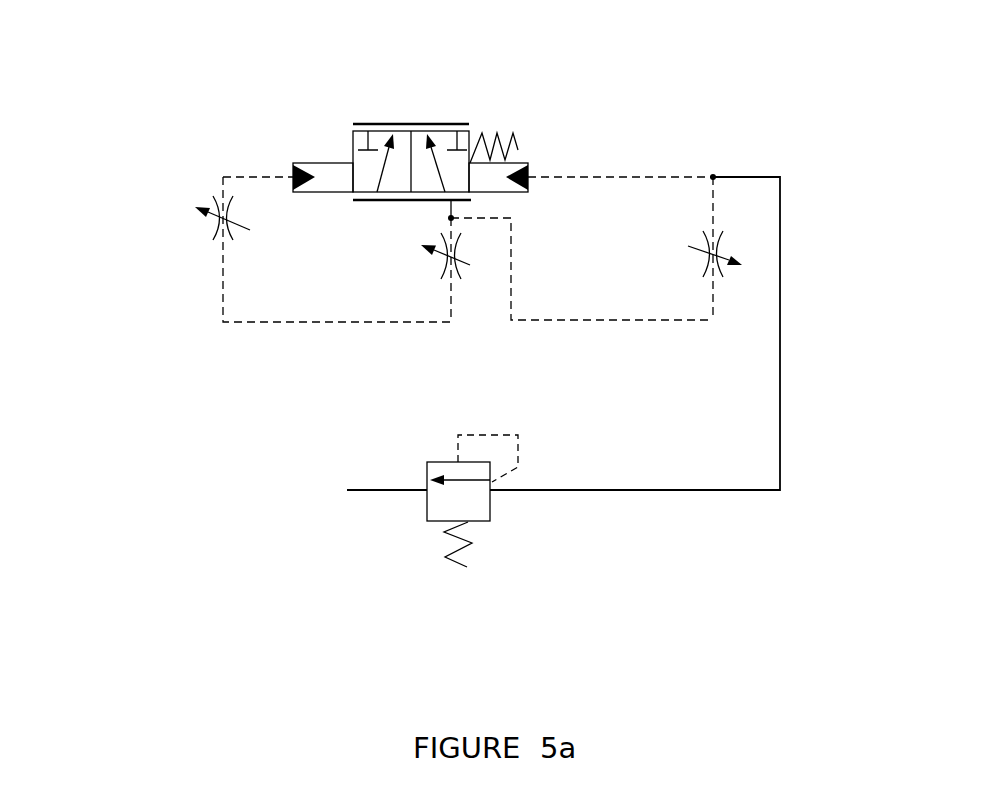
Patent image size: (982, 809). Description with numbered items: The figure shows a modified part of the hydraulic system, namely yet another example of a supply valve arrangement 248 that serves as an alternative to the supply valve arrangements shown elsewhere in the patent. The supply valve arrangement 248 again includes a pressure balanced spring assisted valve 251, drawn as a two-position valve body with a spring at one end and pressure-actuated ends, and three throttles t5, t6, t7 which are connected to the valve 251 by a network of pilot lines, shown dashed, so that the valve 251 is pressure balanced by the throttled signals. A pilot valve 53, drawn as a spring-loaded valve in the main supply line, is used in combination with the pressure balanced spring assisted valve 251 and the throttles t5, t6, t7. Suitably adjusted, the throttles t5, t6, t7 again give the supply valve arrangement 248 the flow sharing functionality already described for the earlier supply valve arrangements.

The supply valve arrangement 248 is at (313, 440).
The pressure balanced spring assisted valve 251 is at (365, 163).
The throttle t5 is at (210, 227).
The throttle t6 is at (456, 268).
The throttle t7 is at (722, 250).
The pilot valve 53 is at (500, 534).